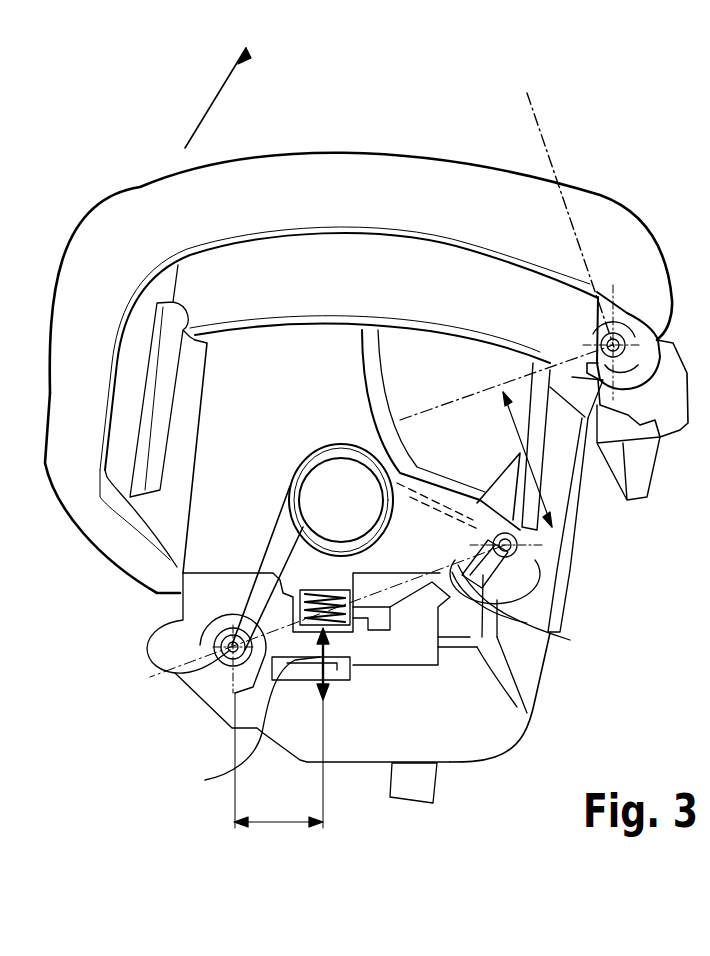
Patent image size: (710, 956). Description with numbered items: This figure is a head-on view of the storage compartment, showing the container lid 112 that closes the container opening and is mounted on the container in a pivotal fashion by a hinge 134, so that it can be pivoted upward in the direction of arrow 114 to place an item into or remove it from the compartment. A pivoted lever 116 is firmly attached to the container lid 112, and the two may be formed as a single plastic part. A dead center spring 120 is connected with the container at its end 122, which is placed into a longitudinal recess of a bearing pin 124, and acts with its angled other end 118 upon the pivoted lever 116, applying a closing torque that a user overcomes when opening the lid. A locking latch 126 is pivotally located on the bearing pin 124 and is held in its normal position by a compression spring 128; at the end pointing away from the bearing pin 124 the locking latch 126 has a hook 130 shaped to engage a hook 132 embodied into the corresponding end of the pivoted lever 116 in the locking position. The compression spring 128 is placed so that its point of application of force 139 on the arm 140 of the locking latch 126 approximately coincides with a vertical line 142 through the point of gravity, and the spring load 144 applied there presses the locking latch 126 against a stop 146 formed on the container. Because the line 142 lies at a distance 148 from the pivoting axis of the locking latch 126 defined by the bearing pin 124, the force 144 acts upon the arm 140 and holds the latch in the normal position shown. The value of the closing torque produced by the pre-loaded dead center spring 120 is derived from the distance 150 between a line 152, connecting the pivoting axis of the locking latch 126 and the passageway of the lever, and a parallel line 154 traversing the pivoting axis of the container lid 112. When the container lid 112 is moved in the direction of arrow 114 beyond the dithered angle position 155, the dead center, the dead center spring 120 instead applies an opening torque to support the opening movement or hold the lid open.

The container lid 112 is at (157, 200).
The arrow 114 is at (208, 100).
The pivoted lever 116 is at (360, 370).
The end of dead center spring 118 is at (570, 562).
The dead center spring 120 is at (283, 493).
The end of dead center spring 122 is at (180, 622).
The bearing pin 124 is at (153, 660).
The locking latch 126 is at (535, 705).
The compression spring 128 is at (333, 588).
The hook 130 is at (560, 663).
The hook 132 is at (560, 605).
The hinge 134 is at (620, 300).
The point of application of force 139 is at (235, 710).
The arm 140 is at (370, 653).
The line 142 is at (323, 772).
The spring load 144 is at (335, 658).
The stop 146 is at (207, 780).
The distance 148 is at (282, 827).
The distance 150 is at (510, 430).
The line 152 is at (580, 520).
The line 154 is at (473, 397).
The dithered angle position 155 is at (536, 108).